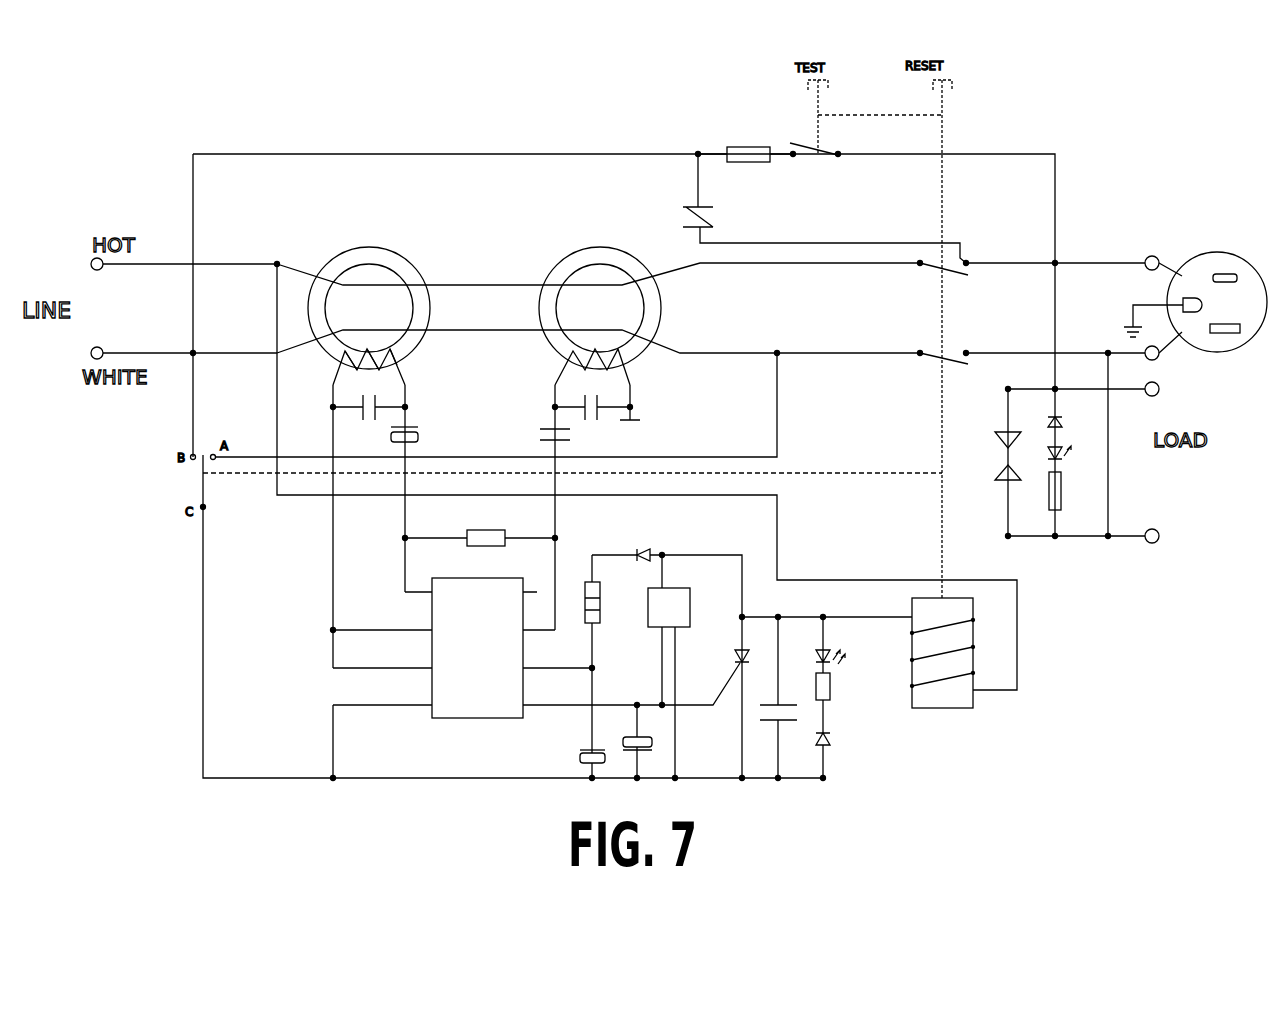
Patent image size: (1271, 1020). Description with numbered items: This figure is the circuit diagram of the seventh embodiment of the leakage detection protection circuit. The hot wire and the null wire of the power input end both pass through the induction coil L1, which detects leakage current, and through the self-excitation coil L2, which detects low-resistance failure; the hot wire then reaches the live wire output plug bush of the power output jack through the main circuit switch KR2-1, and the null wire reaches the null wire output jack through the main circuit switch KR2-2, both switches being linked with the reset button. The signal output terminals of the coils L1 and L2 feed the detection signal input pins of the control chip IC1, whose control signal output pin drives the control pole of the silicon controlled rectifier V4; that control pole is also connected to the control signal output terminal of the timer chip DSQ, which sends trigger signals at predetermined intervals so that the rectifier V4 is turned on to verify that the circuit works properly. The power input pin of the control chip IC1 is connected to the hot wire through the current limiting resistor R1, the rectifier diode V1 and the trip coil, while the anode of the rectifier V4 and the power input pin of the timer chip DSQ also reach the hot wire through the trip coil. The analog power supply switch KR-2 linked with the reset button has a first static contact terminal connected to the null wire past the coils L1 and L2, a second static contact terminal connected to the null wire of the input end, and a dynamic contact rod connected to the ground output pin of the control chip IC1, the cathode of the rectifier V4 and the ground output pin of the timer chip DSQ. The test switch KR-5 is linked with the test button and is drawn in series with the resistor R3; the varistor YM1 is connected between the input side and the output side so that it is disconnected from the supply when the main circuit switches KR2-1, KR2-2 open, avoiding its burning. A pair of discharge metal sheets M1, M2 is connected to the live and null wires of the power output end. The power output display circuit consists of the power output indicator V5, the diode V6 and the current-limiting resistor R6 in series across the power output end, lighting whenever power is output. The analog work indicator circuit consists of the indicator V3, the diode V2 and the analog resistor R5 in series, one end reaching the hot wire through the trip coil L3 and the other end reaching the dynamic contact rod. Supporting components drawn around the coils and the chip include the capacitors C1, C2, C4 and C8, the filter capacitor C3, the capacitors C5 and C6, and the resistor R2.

The induction coil L1 is at (369, 307).
The self-excitation coil L2 is at (600, 307).
The solenoid coil SOL L3 is at (943, 668).
The capacitor C1 is at (369, 521).
The capacitor C2 is at (597, 502).
The filter capacitor C3 is at (576, 757).
The capacitor C4 is at (415, 431).
The capacitor C5 is at (639, 742).
The capacitor C6 is at (774, 698).
The capacitor C8 is at (567, 438).
The current limiting resistor R1 is at (608, 668).
The resistor R2 is at (480, 529).
The test resistor R3 is at (745, 145).
The analog resistor R5 is at (812, 703).
The current-limiting resistor R6 is at (1065, 491).
The rectifier diode V1 is at (667, 655).
The diode V2 is at (812, 757).
The light emitting diode LED1 V3 is at (815, 644).
The SCR V4 is at (805, 698).
The light emitting diode LED2 V5 is at (1070, 464).
The diode V6 is at (1063, 420).
The discharge metal sheet M1 is at (1000, 445).
The discharge metal sheet M2 is at (1000, 486).
The control chip IC1 is at (536, 679).
The timer chip DSQ is at (668, 668).
The metal oxide varistor MOV YM1 is at (824, 208).
The test switch KR-5 is at (820, 144).
The analog power supply switch KR-2 is at (572, 484).
The main circuit switch KR2-1 is at (1006, 259).
The main circuit switch KR2-2 is at (1006, 349).